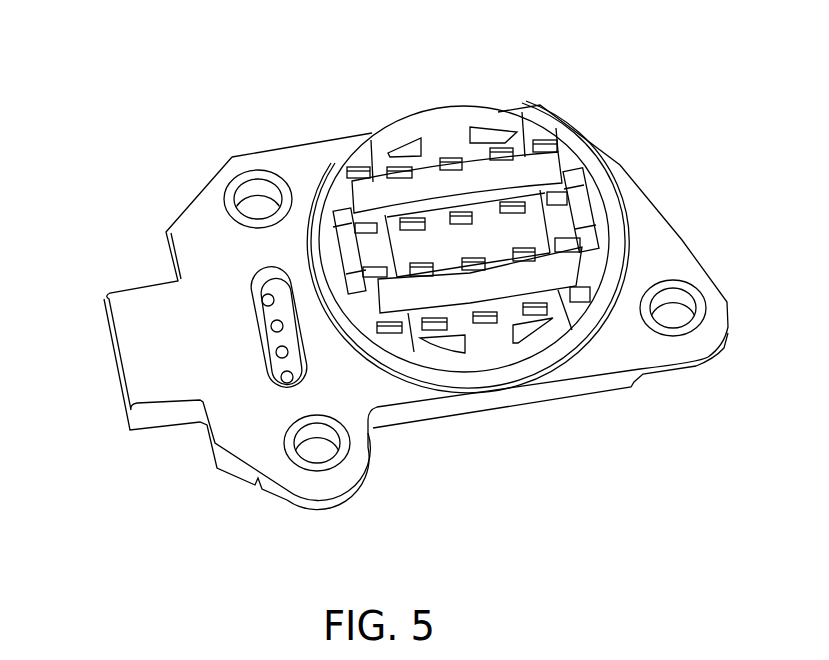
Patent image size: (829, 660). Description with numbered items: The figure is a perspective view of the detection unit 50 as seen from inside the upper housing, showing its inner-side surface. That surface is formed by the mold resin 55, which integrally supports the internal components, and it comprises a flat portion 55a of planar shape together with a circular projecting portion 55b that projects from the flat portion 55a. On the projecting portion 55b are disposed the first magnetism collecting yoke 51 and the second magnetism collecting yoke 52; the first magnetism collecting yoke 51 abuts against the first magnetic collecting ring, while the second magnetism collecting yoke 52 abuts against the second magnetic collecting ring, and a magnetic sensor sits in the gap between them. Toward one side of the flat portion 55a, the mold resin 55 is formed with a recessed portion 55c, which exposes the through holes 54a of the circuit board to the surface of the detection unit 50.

The detection unit 50 is at (652, 107).
The first magnetism collecting yoke 51 is at (533, 170).
The second magnetism collecting yoke 52 is at (563, 265).
The through holes 54a is at (265, 300).
The mold resin 55 is at (231, 158).
The flat portion 55a is at (305, 163).
The projecting portion 55b is at (433, 120).
The recessed portion 55c is at (247, 280).